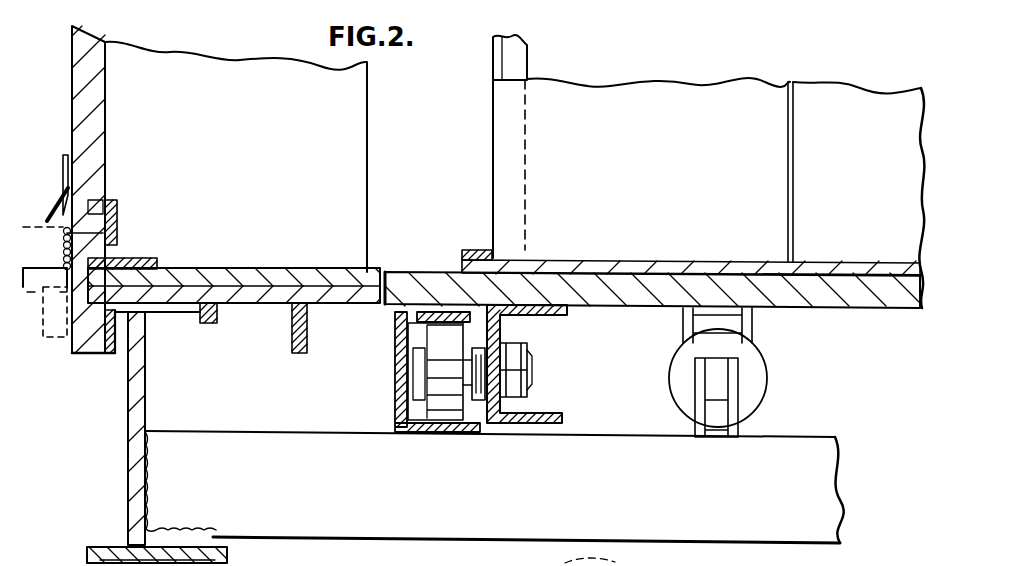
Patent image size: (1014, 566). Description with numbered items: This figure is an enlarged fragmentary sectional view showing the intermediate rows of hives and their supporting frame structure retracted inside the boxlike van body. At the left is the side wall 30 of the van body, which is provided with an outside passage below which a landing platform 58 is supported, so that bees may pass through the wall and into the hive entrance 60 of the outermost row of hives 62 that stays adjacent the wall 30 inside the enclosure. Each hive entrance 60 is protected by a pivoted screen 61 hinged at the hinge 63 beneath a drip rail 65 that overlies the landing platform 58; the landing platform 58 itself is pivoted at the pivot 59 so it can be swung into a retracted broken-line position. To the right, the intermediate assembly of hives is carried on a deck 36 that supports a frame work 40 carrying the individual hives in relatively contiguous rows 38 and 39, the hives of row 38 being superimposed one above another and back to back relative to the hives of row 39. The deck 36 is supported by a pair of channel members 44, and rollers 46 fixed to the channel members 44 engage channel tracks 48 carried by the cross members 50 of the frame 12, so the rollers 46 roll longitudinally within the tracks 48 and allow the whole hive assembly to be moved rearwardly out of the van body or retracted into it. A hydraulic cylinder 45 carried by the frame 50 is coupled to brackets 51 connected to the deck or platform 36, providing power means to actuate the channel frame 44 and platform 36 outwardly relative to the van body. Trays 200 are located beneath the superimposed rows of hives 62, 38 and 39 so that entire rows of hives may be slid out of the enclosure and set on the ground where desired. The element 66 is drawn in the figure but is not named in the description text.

The frame 12 is at (128, 405).
The side wall 30 is at (72, 93).
The deck 36 is at (625, 280).
The row of hives 38 is at (658, 112).
The row of hives 39 is at (873, 118).
The frame work 40 is at (520, 64).
The channel member 44 is at (545, 308).
The hydraulic cylinder 45 is at (768, 380).
The roller 46 is at (403, 378).
The channel track 48 is at (400, 415).
The cross member 50 is at (588, 440).
The bracket 51 is at (754, 318).
The landing platform 58 is at (60, 328).
The pivot 59 is at (76, 354).
The hive entrance 60 is at (115, 252).
The pivoted screen 61 is at (118, 206).
The outermost row of hives 62 is at (254, 154).
The hinge 63 is at (90, 200).
The drip rail 65 is at (58, 188).
The spring 66 is at (47, 216).
The tray 200 is at (478, 250).